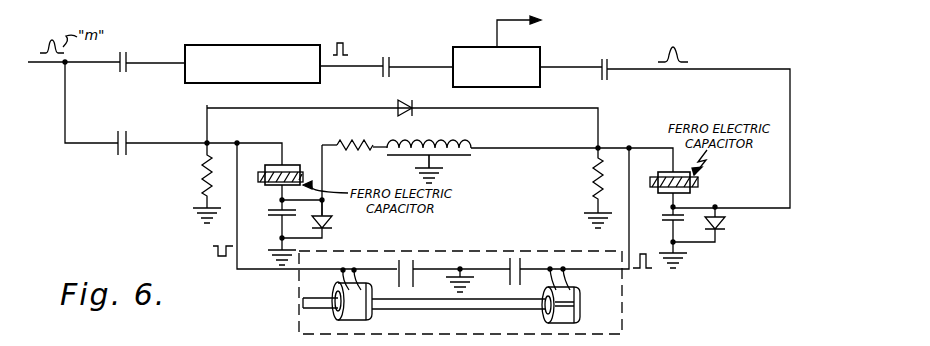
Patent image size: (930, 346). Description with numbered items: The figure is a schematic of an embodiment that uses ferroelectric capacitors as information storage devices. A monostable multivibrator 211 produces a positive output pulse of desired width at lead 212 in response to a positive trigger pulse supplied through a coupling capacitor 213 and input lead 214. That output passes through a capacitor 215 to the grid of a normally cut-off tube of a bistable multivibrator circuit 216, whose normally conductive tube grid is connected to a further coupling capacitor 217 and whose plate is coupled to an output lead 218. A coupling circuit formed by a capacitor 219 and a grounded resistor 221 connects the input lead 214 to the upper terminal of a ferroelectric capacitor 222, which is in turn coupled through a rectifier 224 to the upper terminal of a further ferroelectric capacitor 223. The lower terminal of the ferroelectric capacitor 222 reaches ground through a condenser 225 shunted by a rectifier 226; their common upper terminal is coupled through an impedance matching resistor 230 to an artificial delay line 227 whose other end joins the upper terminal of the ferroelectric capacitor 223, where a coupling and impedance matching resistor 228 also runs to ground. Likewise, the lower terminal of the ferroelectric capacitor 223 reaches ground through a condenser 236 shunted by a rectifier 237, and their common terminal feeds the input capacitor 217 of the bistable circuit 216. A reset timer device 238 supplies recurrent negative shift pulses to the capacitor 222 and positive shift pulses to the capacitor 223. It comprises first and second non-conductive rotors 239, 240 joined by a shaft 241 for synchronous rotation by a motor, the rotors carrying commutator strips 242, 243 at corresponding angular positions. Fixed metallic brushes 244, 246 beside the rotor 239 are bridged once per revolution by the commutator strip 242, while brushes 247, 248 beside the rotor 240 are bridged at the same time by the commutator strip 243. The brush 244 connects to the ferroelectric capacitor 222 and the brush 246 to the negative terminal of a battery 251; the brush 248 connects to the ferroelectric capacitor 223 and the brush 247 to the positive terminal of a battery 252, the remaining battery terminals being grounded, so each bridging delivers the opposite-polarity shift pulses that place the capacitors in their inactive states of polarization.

The monostable multivibrator 211 is at (218, 86).
The lead 212 is at (357, 62).
The coupling capacitor 213 is at (128, 70).
The input lead 214 is at (40, 64).
The capacitor 215 is at (391, 70).
The bistable multivibrator circuit 216 is at (474, 89).
The coupling capacitor 217 is at (610, 76).
The output lead 218 is at (518, 24).
The capacitor 219 is at (129, 136).
The resistor 221 is at (200, 180).
The ferroelectric capacitor 222 is at (302, 170).
The ferroelectric capacitor 223 is at (700, 182).
The rectifier 224 is at (415, 112).
The condenser 225 is at (294, 215).
The rectifier 226 is at (334, 222).
The artificial delay line 227 is at (458, 158).
The coupling and impedance matching resistor 228 is at (592, 184).
The impedance matching resistor 230 is at (340, 138).
The condenser 236 is at (669, 222).
The rectifier 237 is at (724, 224).
The reset timer device 238 is at (625, 312).
The first non-conductive rotor 239 is at (338, 314).
The second non-conductive rotor 240 is at (566, 316).
The shaft 241 is at (483, 310).
The commutator strip 242 is at (366, 312).
The commutator strip 243 is at (574, 304).
The fixed metallic brush 244 is at (342, 270).
The fixed metallic brush 246 is at (358, 262).
The fixed metallic brush 247 is at (554, 262).
The fixed metallic brush 248 is at (566, 268).
The battery 251 is at (420, 263).
The battery 252 is at (509, 272).